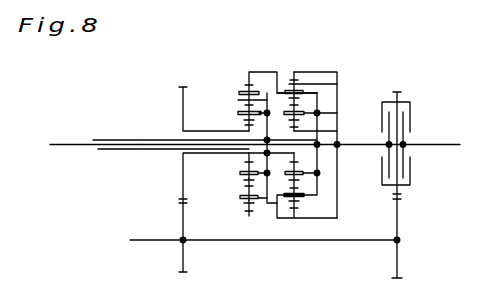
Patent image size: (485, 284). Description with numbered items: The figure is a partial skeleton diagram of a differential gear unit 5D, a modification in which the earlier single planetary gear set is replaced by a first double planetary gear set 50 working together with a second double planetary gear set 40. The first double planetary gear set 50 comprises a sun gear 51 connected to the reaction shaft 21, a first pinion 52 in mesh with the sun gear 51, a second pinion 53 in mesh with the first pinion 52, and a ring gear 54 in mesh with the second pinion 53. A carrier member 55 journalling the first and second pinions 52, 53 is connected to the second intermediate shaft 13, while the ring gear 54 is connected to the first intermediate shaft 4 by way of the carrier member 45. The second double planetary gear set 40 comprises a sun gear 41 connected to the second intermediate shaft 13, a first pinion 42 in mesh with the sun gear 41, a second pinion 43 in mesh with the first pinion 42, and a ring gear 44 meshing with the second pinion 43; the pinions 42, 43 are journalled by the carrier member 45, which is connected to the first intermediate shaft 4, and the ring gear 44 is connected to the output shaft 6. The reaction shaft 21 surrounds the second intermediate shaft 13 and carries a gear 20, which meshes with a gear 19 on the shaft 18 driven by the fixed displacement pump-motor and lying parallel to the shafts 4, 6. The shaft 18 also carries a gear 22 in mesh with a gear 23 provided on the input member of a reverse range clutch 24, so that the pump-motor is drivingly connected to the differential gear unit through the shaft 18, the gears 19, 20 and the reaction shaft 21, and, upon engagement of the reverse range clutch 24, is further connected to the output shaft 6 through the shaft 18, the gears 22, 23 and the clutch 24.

The first intermediate shaft 4 is at (105, 149).
The output shaft 6 is at (427, 143).
The second intermediate shaft 13 is at (137, 139).
The differential gear unit 5D is at (298, 41).
The first double planetary gear set 50 is at (255, 61).
The carrier member 55 is at (238, 100).
The reaction shaft 21 is at (210, 132).
The second double planetary gear set 40 is at (333, 69).
The ring gear 44 is at (296, 74).
The second pinion 43 is at (324, 86).
The first pinion 42 is at (331, 111).
The sun gear 41 is at (326, 133).
The carrier member 45 is at (321, 165).
The sun gear 51 is at (243, 160).
The first pinion 52 is at (240, 183).
The second pinion 53 is at (240, 205).
The ring gear 54 is at (252, 217).
The gear 20 is at (180, 198).
The gear 19 is at (181, 251).
The shaft 18 is at (342, 241).
The reverse range clutch 24 is at (383, 100).
The gear 23 is at (400, 194).
The gear 22 is at (398, 257).